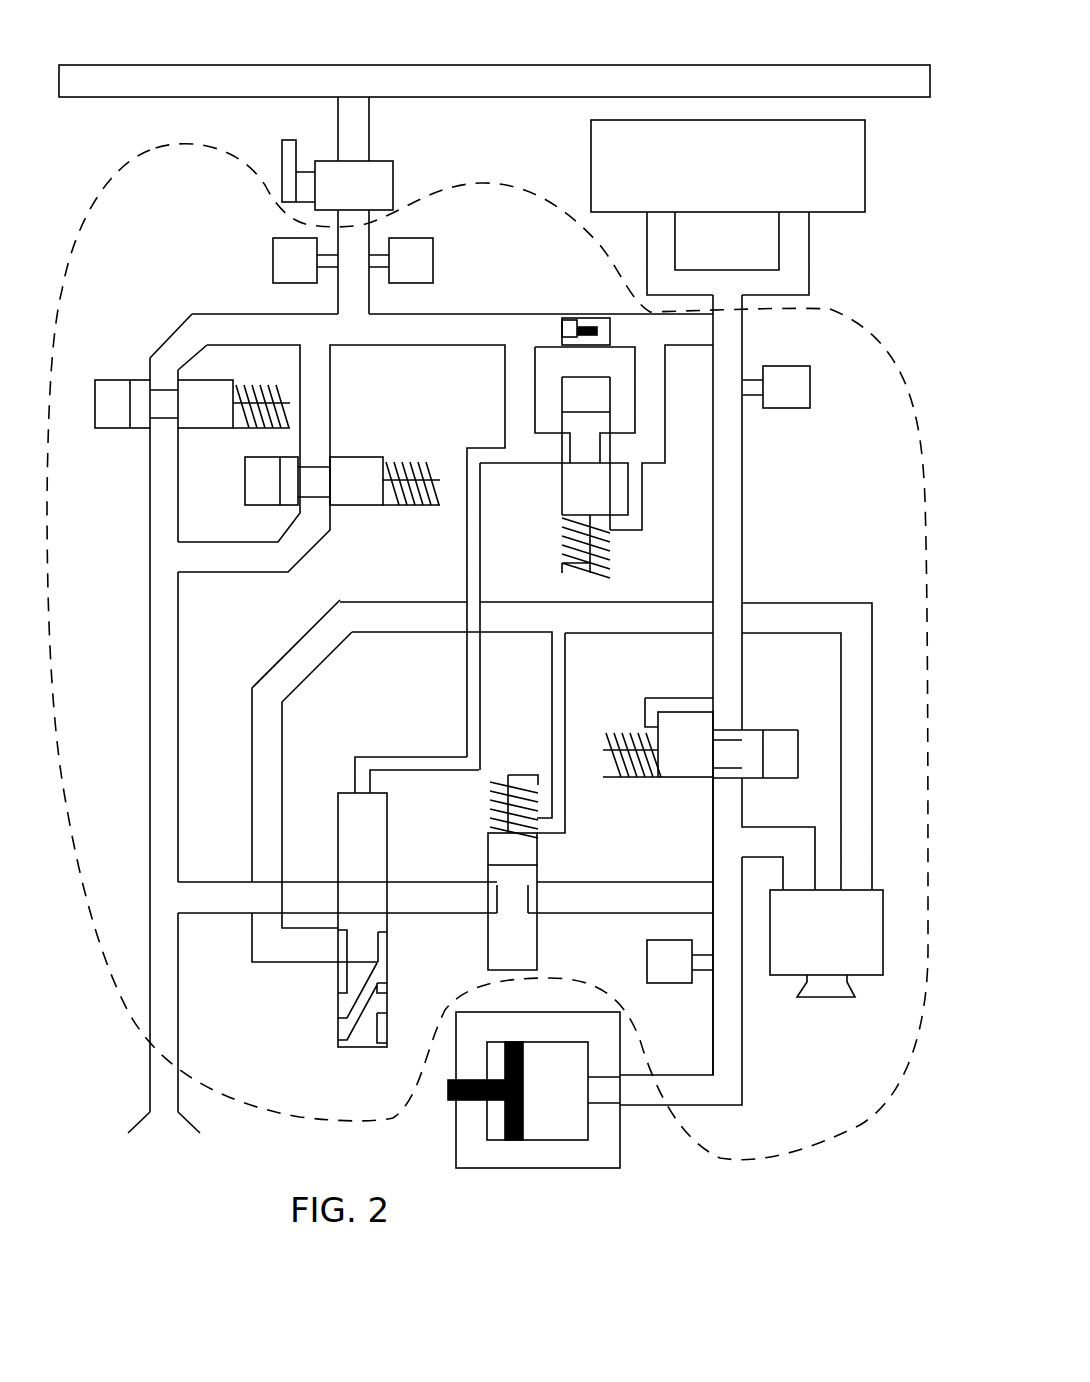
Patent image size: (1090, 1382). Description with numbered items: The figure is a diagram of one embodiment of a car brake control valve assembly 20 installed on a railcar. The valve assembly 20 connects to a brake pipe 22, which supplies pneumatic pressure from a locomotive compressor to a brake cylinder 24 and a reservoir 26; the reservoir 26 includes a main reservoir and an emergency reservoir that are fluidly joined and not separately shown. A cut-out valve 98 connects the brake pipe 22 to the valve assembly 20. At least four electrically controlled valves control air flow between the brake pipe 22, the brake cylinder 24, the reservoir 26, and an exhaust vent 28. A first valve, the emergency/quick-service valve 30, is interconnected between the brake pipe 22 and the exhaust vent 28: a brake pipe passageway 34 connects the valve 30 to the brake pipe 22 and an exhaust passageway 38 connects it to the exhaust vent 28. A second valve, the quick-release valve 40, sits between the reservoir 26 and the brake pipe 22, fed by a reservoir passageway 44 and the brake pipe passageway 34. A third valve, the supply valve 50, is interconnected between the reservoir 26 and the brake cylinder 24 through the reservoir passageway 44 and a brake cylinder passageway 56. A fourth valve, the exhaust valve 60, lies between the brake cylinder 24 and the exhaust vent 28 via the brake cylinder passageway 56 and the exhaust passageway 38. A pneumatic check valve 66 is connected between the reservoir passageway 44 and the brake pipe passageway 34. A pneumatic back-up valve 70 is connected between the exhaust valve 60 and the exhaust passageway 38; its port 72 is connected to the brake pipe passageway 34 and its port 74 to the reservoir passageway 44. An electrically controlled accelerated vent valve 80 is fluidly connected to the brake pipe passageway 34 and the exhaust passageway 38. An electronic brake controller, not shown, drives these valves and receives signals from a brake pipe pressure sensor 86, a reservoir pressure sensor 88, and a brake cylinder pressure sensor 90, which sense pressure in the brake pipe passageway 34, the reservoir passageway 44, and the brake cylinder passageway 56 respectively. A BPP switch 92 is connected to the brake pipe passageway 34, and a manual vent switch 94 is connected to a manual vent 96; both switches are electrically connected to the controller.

The car brake control valve assembly 20 is at (830, 307).
The brake pipe 22 is at (688, 67).
The brake cylinder 24 is at (607, 1170).
The reservoir 26 is at (865, 166).
The exhaust vent 28 is at (163, 1116).
The emergency/quick-service valve 30 is at (95, 405).
The brake pipe passageway 34 is at (186, 318).
The exhaust passageway 38 is at (150, 620).
The quick-release valve 40 is at (560, 493).
The reservoir passageway 44 is at (665, 423).
The supply valve 50 is at (685, 780).
The brake cylinder passageway 56 is at (713, 835).
The exhaust valve 60 is at (488, 858).
The pneumatic check valve 66 is at (588, 315).
The pneumatic back-up valve 70 is at (390, 1005).
The port 72 is at (355, 793).
The port 74 is at (338, 958).
The accelerated vent valve 80 is at (357, 456).
The brake pipe pressure sensor 86 is at (273, 238).
The reservoir pressure sensor 88 is at (800, 410).
The brake cylinder pressure sensor 90 is at (647, 970).
The BPP switch 92 is at (433, 240).
The manual vent switch 94 is at (884, 917).
The manual vent 96 is at (846, 997).
The cut-out valve 98 is at (393, 186).